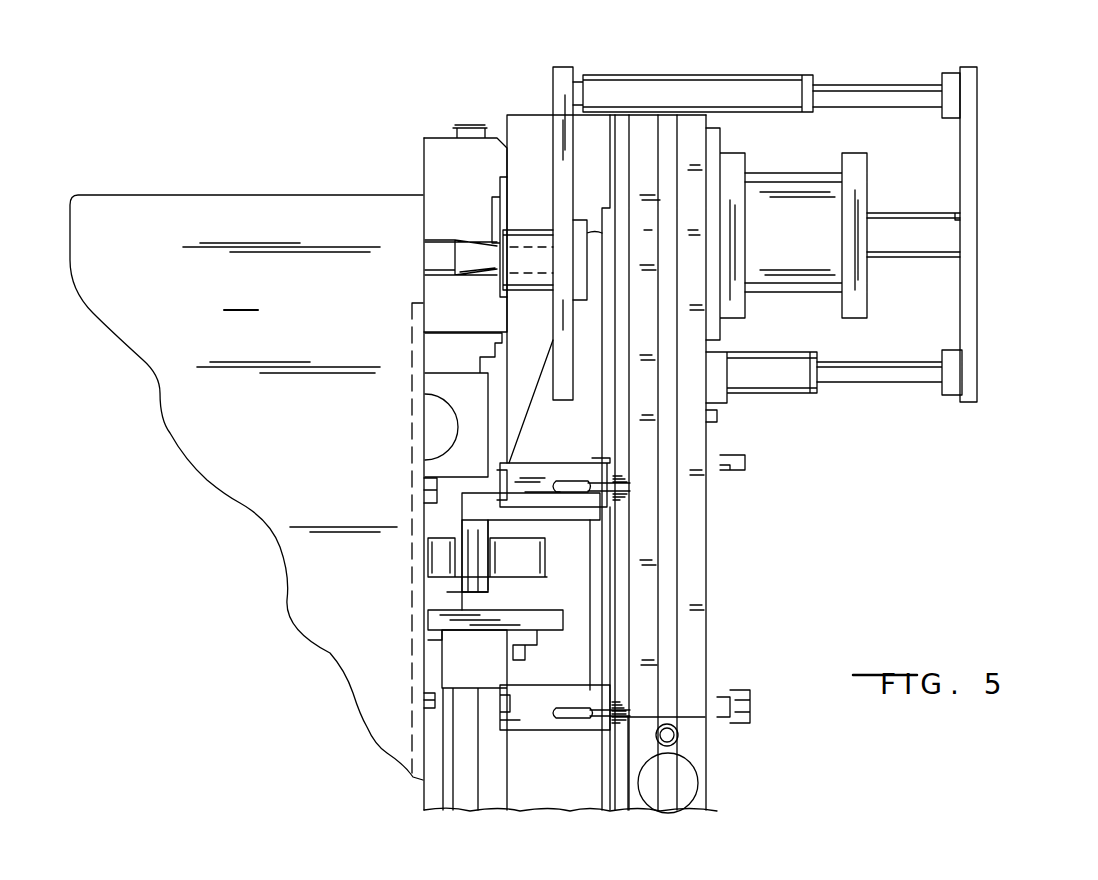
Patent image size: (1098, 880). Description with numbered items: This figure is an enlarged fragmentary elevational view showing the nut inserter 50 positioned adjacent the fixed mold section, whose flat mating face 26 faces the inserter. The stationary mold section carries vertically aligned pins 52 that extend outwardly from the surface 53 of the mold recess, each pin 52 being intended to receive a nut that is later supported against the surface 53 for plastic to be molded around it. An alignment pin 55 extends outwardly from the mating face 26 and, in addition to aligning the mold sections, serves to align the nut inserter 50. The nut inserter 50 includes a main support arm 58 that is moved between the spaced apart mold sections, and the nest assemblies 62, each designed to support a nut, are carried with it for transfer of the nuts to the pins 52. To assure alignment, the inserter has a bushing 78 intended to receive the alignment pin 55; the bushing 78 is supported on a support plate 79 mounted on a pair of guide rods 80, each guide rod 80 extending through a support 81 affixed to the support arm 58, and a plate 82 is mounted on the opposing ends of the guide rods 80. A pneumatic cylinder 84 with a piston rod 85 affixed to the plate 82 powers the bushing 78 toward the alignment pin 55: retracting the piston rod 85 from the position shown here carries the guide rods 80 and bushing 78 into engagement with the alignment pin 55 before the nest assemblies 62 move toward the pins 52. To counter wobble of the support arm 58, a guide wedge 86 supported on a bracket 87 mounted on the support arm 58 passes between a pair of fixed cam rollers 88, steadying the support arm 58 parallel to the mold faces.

The mating face 26 is at (423, 227).
The nut inserter 50 is at (982, 75).
The pins 52 is at (427, 500).
The surface 53 is at (410, 737).
The alignment pin 55 is at (440, 253).
The main support arm 58 is at (689, 128).
The nest assemblies 62 is at (556, 735).
The bushing 78 is at (522, 233).
The support plate 79 is at (557, 130).
The guide rods 80 is at (903, 83).
The support 81 is at (650, 87).
The plate 82 is at (982, 310).
The pneumatic cylinder 84 is at (810, 240).
The piston rod 85 is at (927, 227).
The guide wedge 86 is at (457, 590).
The bracket 87 is at (558, 505).
The cam rollers 88 is at (433, 555).